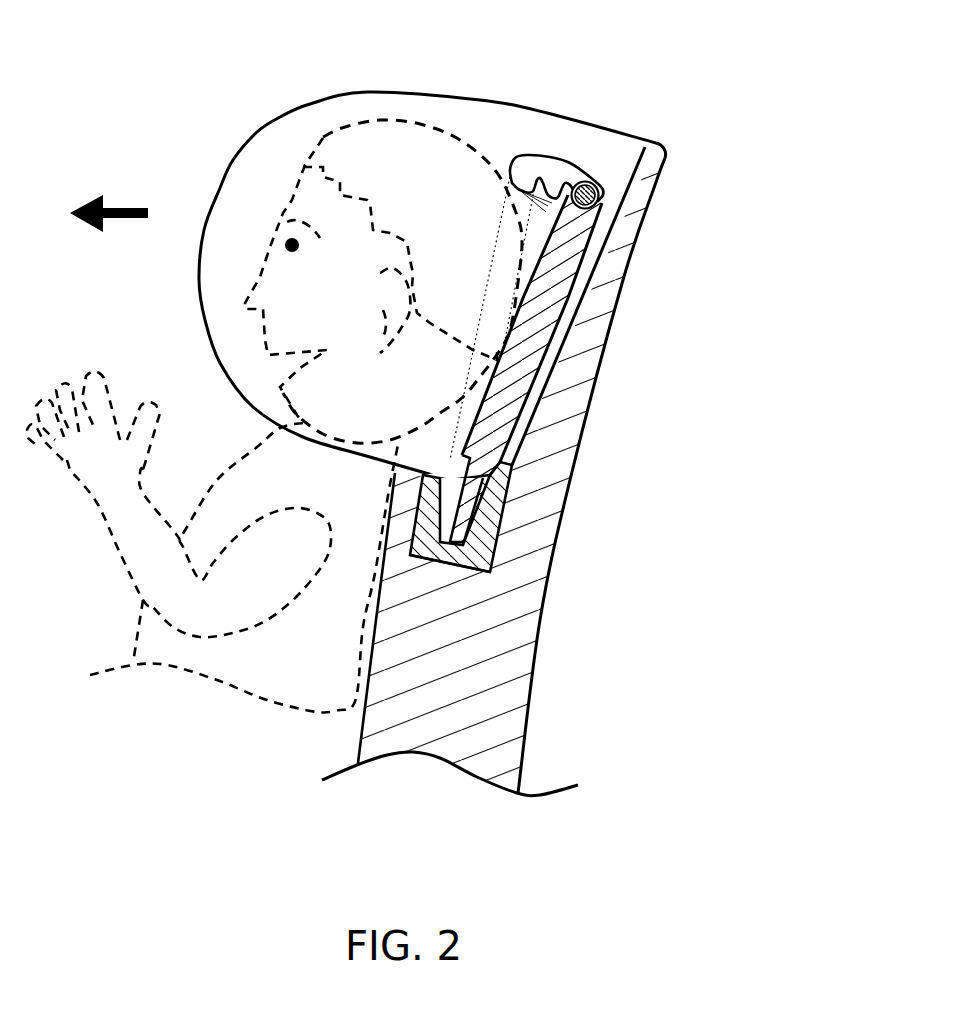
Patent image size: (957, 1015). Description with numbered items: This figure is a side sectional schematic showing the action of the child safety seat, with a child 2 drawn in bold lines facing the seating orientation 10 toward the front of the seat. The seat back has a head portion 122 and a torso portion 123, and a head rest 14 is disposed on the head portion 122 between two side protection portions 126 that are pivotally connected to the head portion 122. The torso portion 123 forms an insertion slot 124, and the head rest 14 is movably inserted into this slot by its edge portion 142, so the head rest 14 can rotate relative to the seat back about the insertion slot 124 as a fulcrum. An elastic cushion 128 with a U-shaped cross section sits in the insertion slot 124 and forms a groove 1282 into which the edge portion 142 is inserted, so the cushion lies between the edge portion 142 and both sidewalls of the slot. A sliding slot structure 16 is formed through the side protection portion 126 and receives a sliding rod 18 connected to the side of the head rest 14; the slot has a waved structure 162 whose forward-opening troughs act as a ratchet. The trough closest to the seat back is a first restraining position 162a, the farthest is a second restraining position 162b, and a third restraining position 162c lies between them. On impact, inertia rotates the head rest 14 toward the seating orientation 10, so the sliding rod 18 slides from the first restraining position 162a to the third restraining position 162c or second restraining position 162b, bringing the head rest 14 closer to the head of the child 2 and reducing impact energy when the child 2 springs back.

The child 2 is at (321, 135).
The seating orientation 10 is at (125, 206).
The head rest 14 is at (523, 360).
The sliding slot structure 16 is at (553, 152).
The sliding rod 18 is at (599, 186).
The head portion 122 is at (567, 430).
The torso portion 123 is at (487, 663).
The insertion slot 124 is at (497, 570).
The side protection portion 126 is at (402, 106).
The elastic cushion 128 is at (490, 523).
The groove 1282 is at (472, 540).
The edge portion 142 is at (465, 503).
The waved structure 162 is at (730, 250).
The first restraining position 162a is at (600, 240).
The second restraining position 162b is at (600, 333).
The third restraining position 162c is at (600, 283).